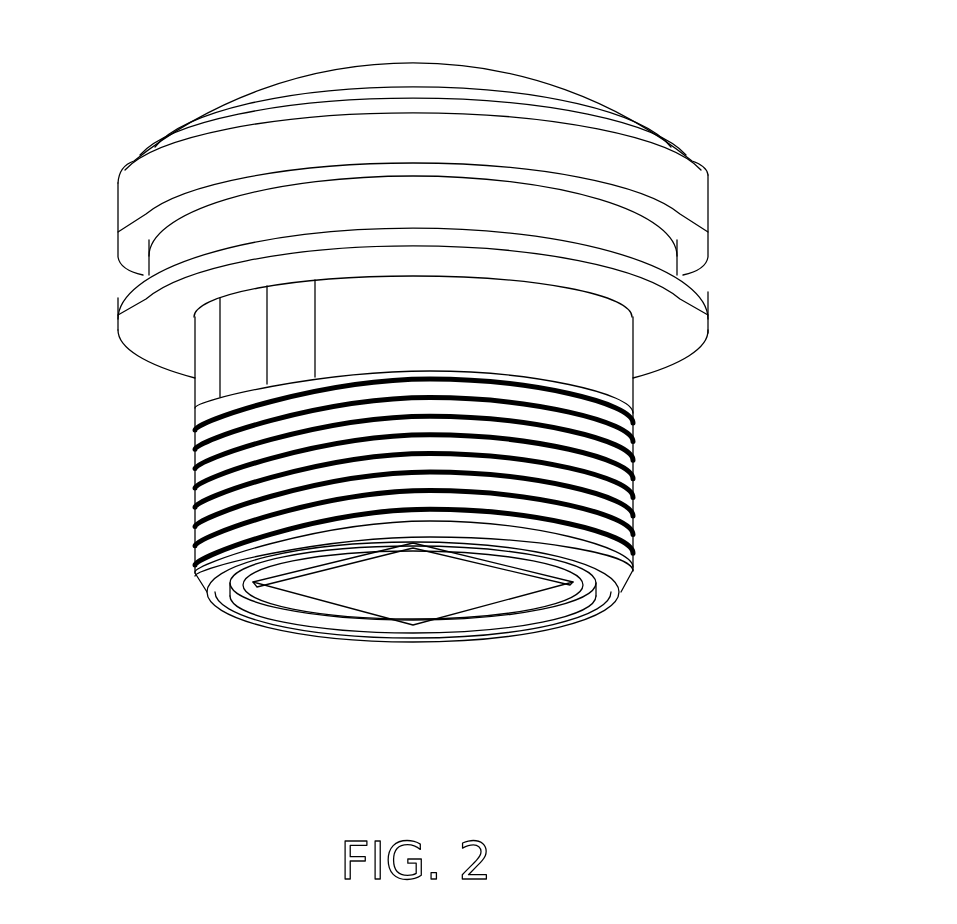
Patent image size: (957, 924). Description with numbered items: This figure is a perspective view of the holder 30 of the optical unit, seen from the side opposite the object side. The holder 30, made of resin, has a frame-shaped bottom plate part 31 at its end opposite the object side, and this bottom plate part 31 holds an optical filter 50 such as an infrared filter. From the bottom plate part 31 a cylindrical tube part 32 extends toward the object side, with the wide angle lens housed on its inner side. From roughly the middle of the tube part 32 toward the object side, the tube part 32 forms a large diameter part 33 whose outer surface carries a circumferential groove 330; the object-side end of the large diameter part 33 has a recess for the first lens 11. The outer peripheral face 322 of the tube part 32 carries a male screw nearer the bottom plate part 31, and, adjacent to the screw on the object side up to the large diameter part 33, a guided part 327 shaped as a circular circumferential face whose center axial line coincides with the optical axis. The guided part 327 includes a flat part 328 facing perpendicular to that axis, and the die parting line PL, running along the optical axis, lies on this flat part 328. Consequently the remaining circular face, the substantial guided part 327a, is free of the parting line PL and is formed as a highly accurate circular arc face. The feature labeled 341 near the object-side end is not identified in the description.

The first lens 11 is at (418, 63).
The curved surface 341 is at (244, 108).
The holder 30 is at (712, 165).
The circumferential groove 330 is at (160, 258).
The large diameter part 33 is at (122, 305).
The parting line PL is at (263, 328).
The flat part 328 is at (230, 368).
The guided part 327 is at (645, 318).
The outer peripheral face 322 is at (645, 423).
The tube part 32 is at (192, 485).
The bottom plate part 31 is at (299, 604).
The optical filter 50 is at (397, 607).
The substantial guided part 327a is at (464, 604).